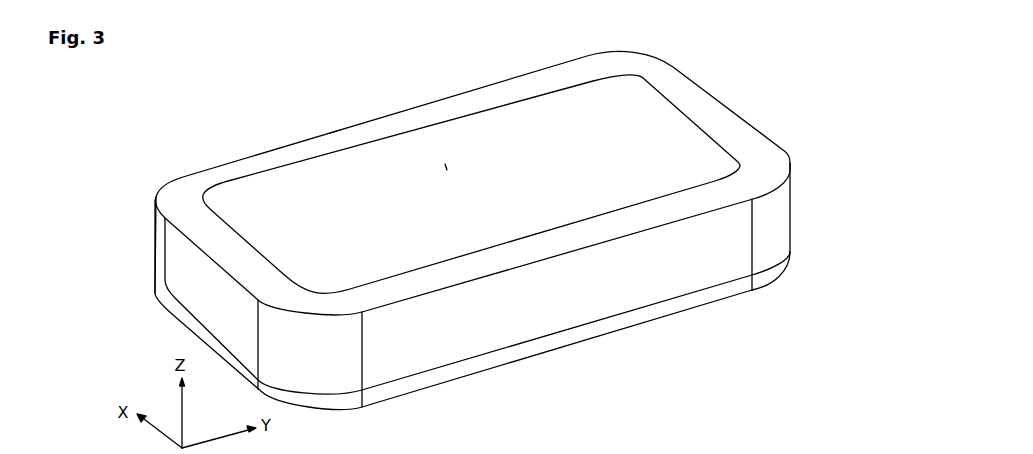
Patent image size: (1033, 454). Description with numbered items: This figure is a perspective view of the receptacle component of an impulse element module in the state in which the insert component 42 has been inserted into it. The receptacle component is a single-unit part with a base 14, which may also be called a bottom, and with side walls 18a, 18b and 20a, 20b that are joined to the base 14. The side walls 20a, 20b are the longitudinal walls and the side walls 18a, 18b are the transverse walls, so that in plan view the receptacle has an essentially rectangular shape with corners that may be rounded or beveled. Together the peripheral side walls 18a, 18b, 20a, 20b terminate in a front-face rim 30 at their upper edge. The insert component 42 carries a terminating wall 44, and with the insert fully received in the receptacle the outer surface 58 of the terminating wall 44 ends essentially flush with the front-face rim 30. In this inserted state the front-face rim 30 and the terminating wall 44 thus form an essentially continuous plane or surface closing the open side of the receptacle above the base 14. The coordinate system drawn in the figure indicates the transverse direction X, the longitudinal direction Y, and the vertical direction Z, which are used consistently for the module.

The base 14 is at (593, 338).
The side wall 18a is at (739, 108).
The side wall 18b is at (207, 303).
The side wall 20a is at (531, 324).
The side wall 20b is at (332, 127).
The front-face rim 30 is at (228, 176).
The insert component 42 is at (710, 72).
The terminating wall 44 is at (598, 137).
The outer surface 58 is at (447, 168).